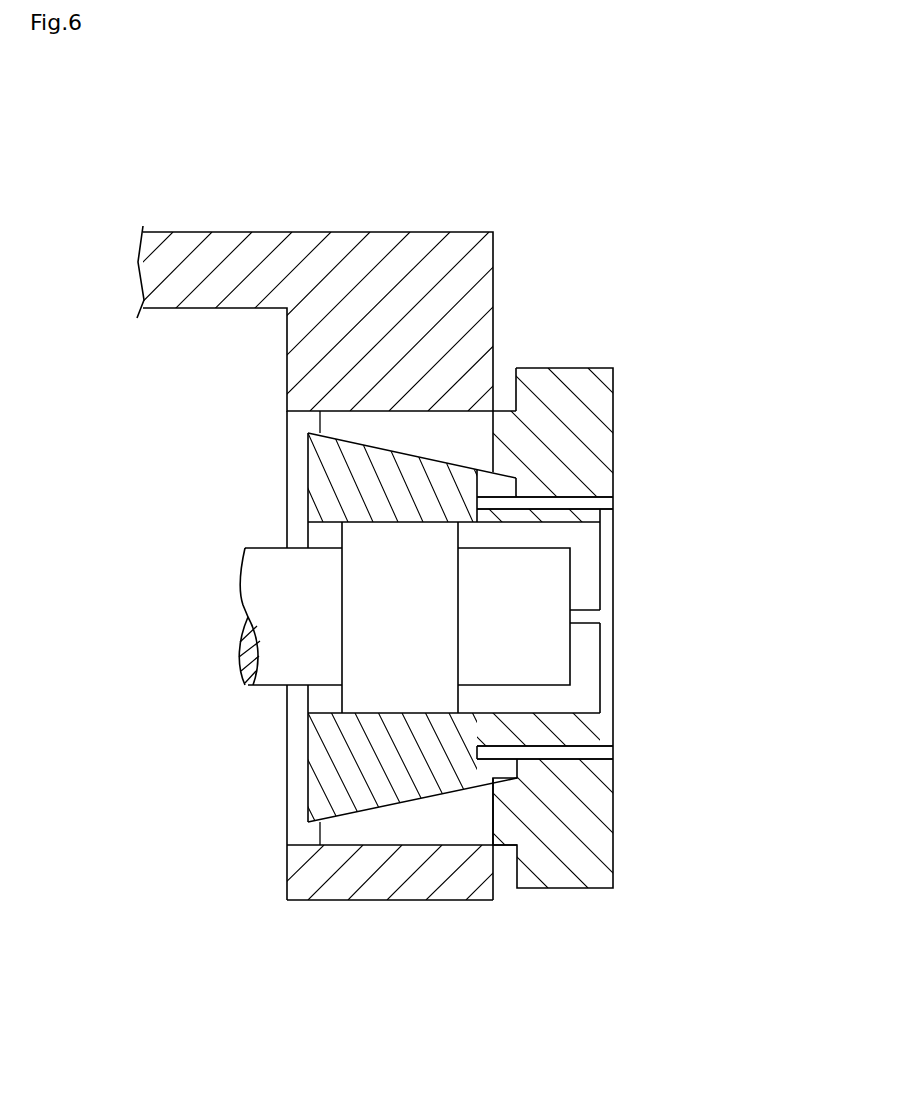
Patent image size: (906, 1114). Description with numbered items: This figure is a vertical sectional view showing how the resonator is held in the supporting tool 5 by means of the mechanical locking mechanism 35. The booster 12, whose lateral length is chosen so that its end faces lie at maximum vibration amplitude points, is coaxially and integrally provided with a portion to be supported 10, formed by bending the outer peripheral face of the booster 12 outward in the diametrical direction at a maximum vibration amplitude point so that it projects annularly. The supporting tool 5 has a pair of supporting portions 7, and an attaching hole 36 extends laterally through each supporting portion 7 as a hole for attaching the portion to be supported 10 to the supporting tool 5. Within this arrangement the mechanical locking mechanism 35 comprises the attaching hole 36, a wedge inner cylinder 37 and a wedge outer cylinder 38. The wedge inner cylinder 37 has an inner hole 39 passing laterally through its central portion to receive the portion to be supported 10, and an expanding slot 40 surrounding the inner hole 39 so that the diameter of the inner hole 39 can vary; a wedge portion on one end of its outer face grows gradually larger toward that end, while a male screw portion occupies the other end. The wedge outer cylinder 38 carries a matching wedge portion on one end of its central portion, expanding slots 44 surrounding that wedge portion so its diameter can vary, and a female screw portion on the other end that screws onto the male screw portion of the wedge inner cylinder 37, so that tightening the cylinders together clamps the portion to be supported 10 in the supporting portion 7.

The supporting tool 5 is at (304, 252).
The supporting portions 7 is at (340, 888).
The portion to be supported 10 is at (357, 647).
The booster 12 is at (263, 575).
The mechanical locking mechanism 35 is at (275, 438).
The attaching hole 36 is at (424, 857).
The wedge inner cylinder 37 is at (313, 466).
The wedge outer cylinder 38 is at (543, 377).
The inner hole 39 is at (588, 704).
The expanding slot 40 is at (600, 615).
The expanding slots 44 is at (438, 423).